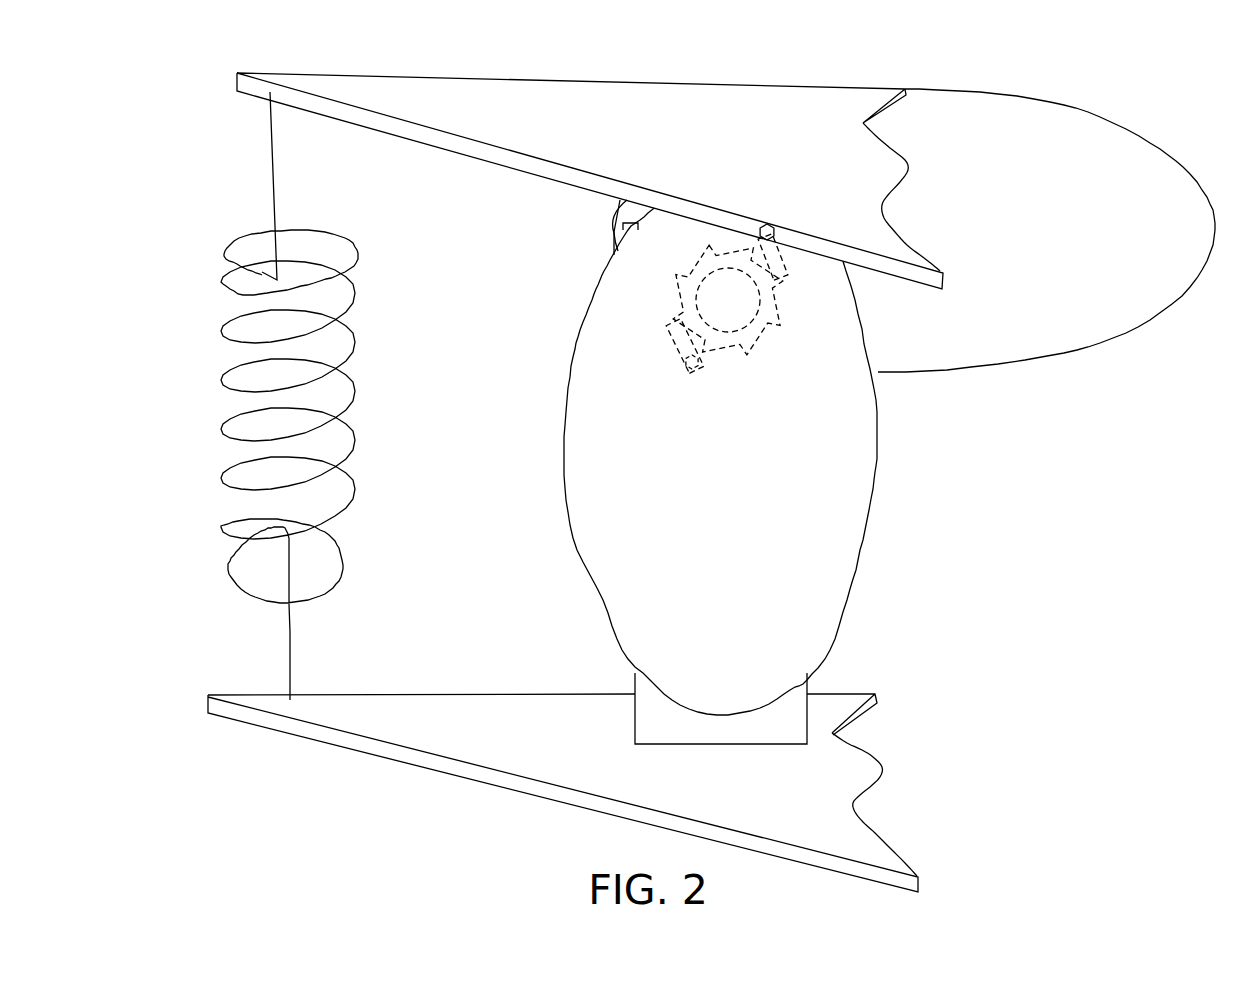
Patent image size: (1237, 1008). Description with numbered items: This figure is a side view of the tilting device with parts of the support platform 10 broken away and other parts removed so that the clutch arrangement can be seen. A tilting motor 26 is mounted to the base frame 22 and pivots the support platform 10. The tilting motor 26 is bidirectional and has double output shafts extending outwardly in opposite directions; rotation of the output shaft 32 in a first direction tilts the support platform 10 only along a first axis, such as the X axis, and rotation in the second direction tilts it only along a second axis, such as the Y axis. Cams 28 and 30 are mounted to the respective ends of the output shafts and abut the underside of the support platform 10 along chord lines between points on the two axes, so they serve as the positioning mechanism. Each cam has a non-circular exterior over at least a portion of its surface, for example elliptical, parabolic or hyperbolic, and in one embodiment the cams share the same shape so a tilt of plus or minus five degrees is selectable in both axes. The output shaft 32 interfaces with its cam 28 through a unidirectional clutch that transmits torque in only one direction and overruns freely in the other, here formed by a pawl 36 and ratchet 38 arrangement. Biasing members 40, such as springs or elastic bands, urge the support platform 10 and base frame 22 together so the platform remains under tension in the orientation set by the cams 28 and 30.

The support platform 10 is at (660, 162).
The base frame 22 is at (400, 763).
The tilting motor 26 is at (623, 229).
The cam 28 is at (862, 548).
The cam 30 is at (1001, 365).
The output shaft 32 is at (703, 300).
The pawl 36 is at (782, 250).
The ratchet 38 is at (763, 340).
The biasing member 40 is at (343, 420).